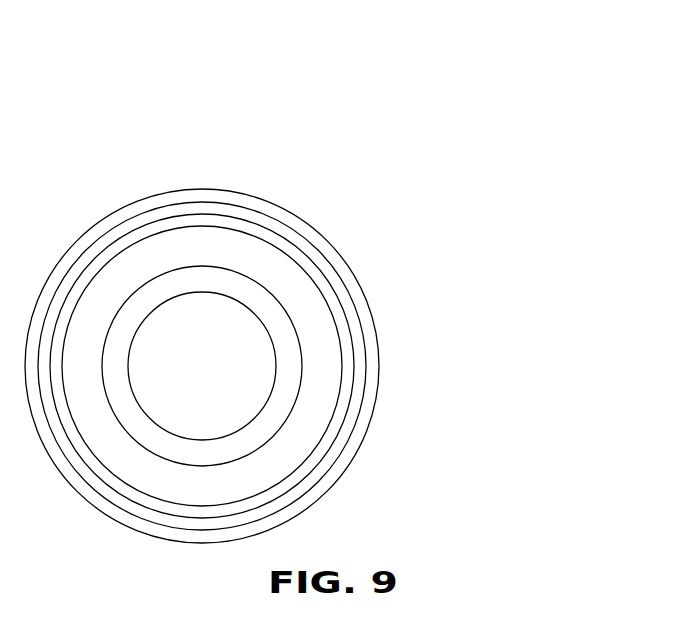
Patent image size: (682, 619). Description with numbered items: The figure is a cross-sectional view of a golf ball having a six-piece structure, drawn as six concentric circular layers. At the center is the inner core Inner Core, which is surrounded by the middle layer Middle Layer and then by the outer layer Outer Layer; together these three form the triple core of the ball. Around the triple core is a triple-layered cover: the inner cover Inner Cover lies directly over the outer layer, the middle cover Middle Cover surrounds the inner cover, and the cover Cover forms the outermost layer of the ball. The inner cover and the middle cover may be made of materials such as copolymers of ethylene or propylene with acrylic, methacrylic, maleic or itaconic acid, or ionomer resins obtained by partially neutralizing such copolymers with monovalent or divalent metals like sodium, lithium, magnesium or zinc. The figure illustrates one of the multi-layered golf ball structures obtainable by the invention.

The cover Cover is at (254, 283).
The middle cover Middle Cover is at (328, 307).
The inner cover Inner Cover is at (324, 326).
The outer layer Outer Layer is at (337, 349).
The middle layer Middle Layer is at (372, 363).
The inner core Inner Core is at (372, 366).